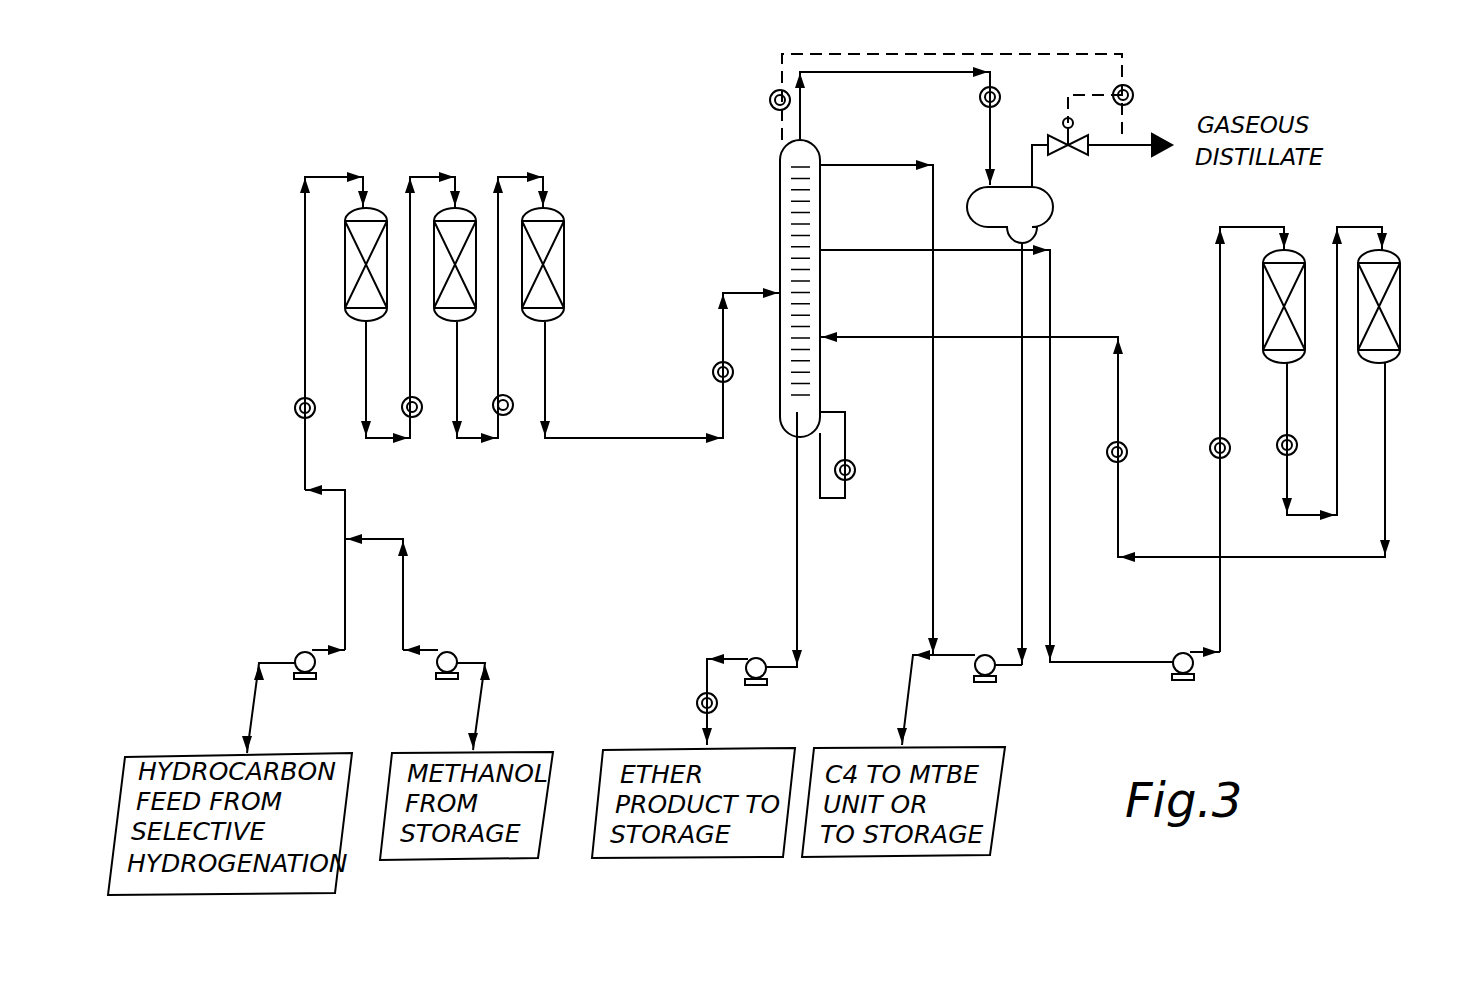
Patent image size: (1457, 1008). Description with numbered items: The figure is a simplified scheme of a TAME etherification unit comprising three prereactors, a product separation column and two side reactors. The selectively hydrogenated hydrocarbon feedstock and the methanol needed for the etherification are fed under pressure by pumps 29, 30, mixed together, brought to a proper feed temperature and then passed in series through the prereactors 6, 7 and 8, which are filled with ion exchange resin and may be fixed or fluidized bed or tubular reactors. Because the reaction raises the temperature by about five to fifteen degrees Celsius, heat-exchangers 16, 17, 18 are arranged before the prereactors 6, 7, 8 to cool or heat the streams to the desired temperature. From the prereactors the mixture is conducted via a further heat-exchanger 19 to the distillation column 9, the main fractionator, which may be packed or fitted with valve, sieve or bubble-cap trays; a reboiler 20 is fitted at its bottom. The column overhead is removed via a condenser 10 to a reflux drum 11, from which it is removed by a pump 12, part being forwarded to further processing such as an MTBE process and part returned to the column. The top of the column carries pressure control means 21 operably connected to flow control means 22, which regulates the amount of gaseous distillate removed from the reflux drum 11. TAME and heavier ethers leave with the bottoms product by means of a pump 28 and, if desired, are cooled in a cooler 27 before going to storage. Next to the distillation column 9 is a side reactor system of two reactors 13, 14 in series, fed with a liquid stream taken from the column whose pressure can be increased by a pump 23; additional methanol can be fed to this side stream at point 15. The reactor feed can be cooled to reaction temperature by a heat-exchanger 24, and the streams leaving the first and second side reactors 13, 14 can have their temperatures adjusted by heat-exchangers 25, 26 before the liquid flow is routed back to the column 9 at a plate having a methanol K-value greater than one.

The prereactor 6 is at (360, 318).
The prereactor 7 is at (463, 318).
The prereactor 8 is at (551, 318).
The distillation column 9 is at (780, 207).
The condenser 10 is at (980, 97).
The reflux drum 11 is at (1053, 205).
The pump 12 is at (985, 655).
The side reactor 13 is at (1277, 358).
The side reactor 14 is at (1395, 355).
The methanol feed point 15 is at (1220, 593).
The heat-exchanger 16 is at (298, 418).
The heat-exchanger 17 is at (419, 416).
The heat-exchanger 18 is at (509, 414).
The heat-exchanger 19 is at (713, 372).
The reboiler 20 is at (856, 472).
The pressure control means 21 is at (770, 108).
The flow control means 22 is at (1113, 90).
The pump 23 is at (1178, 655).
The heat-exchanger 24 is at (1125, 462).
The heat-exchanger 25 is at (1278, 455).
The heat-exchanger 26 is at (1210, 445).
The cooler 27 is at (697, 703).
The pump 28 is at (750, 658).
The pump 29 is at (298, 655).
The pump 30 is at (452, 655).